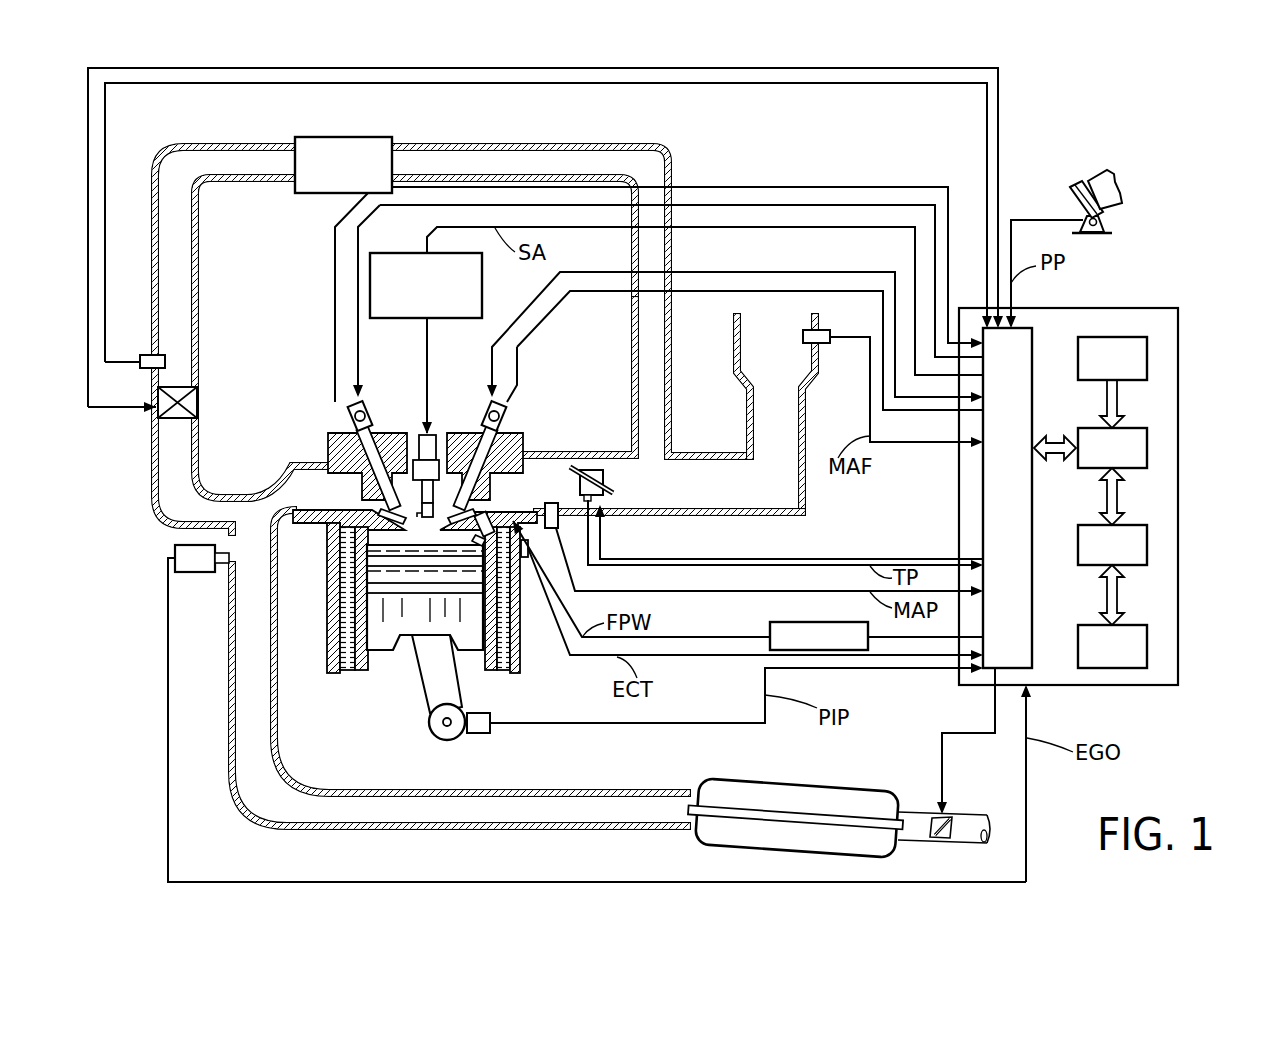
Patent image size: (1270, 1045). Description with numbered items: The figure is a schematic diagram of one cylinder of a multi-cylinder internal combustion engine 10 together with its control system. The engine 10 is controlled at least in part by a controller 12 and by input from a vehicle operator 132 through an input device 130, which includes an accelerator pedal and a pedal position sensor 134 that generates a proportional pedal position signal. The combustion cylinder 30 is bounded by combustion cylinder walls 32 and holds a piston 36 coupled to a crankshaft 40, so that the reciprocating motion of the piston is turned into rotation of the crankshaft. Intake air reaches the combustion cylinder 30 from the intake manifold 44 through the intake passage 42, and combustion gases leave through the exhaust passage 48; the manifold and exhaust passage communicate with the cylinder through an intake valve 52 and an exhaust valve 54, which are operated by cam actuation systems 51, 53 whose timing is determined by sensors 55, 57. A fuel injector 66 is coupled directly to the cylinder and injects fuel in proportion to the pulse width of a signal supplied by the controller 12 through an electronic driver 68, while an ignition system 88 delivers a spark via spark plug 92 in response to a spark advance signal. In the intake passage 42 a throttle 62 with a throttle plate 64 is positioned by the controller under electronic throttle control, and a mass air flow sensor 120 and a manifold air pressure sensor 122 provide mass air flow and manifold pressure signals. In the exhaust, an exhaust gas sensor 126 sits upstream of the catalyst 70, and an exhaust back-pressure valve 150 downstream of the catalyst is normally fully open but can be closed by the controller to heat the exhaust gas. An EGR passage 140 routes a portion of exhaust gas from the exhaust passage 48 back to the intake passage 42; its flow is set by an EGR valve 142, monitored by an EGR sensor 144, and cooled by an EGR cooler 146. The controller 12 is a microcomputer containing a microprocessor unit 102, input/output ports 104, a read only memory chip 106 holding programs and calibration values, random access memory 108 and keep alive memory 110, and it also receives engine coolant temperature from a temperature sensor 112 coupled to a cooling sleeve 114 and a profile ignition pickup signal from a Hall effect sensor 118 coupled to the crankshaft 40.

The internal combustion engine 10 is at (262, 383).
The controller 12 is at (1170, 308).
The combustion cylinder 30 is at (425, 528).
The combustion cylinder walls 32 is at (372, 660).
The piston 36 is at (410, 623).
The crankshaft 40 is at (440, 740).
The intake passage 42 is at (790, 362).
The intake manifold 44 is at (562, 496).
The exhaust passage 48 is at (312, 502).
The intake cam actuation system 51 is at (482, 402).
The intake valve 52 is at (462, 500).
The exhaust cam actuation system 53 is at (368, 402).
The exhaust valve 54 is at (377, 510).
The intake cam sensor 55 is at (508, 420).
The exhaust cam sensor 57 is at (347, 410).
The throttle 62 is at (598, 480).
The throttle plate 64 is at (573, 467).
The fuel injector 66 is at (487, 512).
The electronic driver 68 is at (800, 622).
The catalyst 70 is at (862, 787).
The ignition system 88 is at (388, 253).
The spark plug 92 is at (420, 465).
The microprocessor unit 102 is at (1147, 445).
The input/output ports 104 is at (1033, 340).
The read only memory chip 106 is at (1147, 352).
The random access memory 108 is at (1147, 545).
The keep alive memory 110 is at (1147, 645).
The temperature sensor 112 is at (526, 558).
The cooling sleeve 114 is at (512, 627).
The Hall effect sensor 118 is at (483, 737).
The mass air flow sensor 120 is at (822, 330).
The manifold air pressure sensor 122 is at (551, 529).
The exhaust gas sensor 126 is at (175, 552).
The input device 130 is at (1074, 199).
The vehicle operator 132 is at (1120, 183).
The pedal position sensor 134 is at (1103, 223).
The EGR passage 140 is at (548, 144).
The EGR valve 142 is at (197, 404).
The EGR sensor 144 is at (145, 355).
The EGR cooler 146 is at (343, 136).
The exhaust back-pressure valve 150 is at (950, 816).